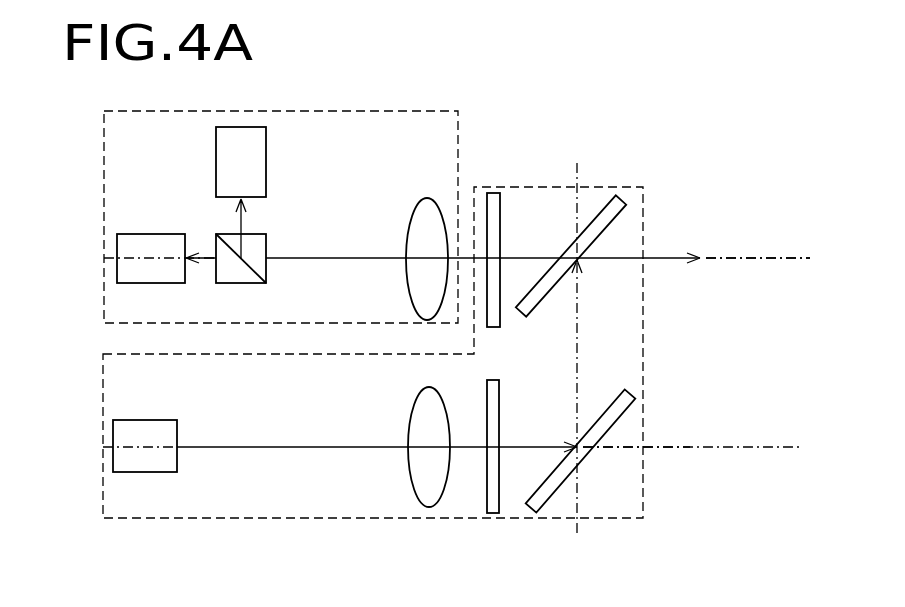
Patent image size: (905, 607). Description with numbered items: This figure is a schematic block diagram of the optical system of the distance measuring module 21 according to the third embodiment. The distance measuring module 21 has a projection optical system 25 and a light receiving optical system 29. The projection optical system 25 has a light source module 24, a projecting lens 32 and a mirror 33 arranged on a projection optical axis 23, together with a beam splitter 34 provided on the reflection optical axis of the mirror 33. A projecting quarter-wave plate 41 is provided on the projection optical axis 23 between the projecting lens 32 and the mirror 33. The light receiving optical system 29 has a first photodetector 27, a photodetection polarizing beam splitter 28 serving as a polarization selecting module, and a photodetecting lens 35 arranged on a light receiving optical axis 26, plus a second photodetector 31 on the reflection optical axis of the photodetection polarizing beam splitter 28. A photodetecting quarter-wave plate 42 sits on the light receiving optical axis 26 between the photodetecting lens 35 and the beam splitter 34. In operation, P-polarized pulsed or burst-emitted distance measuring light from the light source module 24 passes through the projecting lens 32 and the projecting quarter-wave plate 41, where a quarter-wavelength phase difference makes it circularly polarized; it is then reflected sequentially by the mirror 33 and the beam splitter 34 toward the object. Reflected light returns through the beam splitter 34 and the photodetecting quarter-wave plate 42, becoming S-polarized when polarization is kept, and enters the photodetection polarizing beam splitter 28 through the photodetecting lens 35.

The distance measuring module 21 is at (706, 127).
The projection optical axis 23 is at (688, 446).
The light source module 24 is at (177, 458).
The projection optical system 25 is at (340, 520).
The light receiving optical axis 26 is at (757, 261).
The first photodetector 27 is at (160, 234).
The photodetection polarizing beam splitter 28 is at (267, 270).
The light receiving optical system 29 is at (458, 142).
The second photodetector 31 is at (216, 153).
The projecting lens 32 is at (409, 410).
The mirror 33 is at (603, 412).
The beam splitter 34 is at (543, 310).
The photodetecting lens 35 is at (407, 235).
The projecting quarter-wave plate 41 is at (499, 427).
The photodetecting quarter-wave plate 42 is at (500, 231).